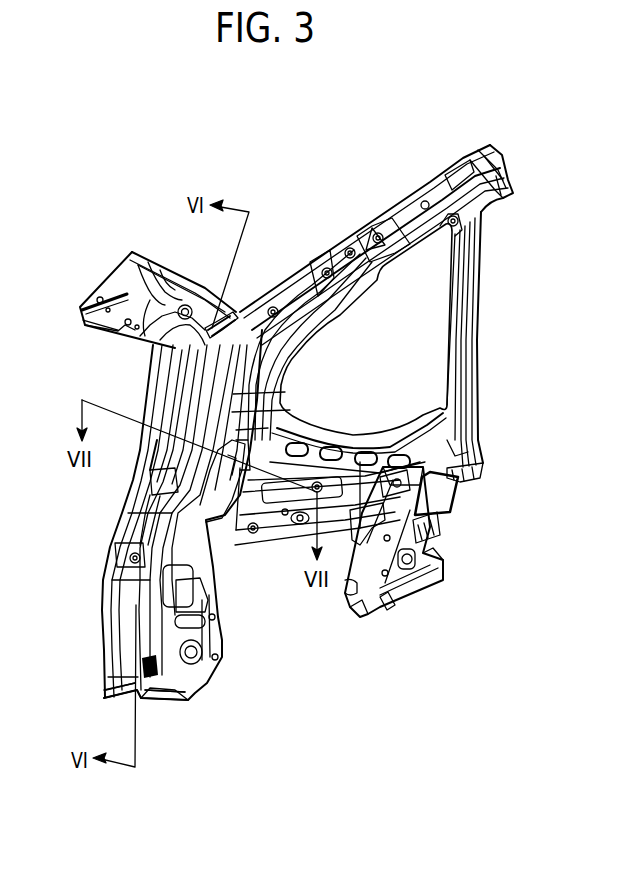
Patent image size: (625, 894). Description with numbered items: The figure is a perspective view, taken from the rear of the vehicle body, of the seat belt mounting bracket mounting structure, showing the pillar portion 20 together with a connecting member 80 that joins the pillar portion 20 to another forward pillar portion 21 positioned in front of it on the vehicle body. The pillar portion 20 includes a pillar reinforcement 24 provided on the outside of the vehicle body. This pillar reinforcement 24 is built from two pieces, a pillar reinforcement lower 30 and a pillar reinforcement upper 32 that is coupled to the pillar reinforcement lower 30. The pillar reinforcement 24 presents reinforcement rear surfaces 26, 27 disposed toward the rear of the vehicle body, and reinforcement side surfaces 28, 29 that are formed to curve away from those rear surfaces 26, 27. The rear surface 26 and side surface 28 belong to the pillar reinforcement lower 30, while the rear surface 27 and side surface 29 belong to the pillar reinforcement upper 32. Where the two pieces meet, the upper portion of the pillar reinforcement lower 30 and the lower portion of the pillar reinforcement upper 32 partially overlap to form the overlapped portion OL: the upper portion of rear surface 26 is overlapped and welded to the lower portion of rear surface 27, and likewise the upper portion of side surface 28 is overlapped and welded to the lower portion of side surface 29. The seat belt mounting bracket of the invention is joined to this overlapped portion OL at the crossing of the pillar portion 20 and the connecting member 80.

The pillar portion 20 is at (226, 645).
The forward pillar portion 21 is at (482, 298).
The pillar reinforcement 24 is at (115, 705).
The reinforcement rear surface 26 is at (145, 515).
The reinforcement rear surface 27 is at (185, 410).
The reinforcement side surface 28 is at (195, 508).
The reinforcement side surface 29 is at (297, 412).
The pillar reinforcement lower 30 is at (101, 552).
The pillar reinforcement upper 32 is at (190, 395).
The connecting member 80 is at (361, 431).
The overlapped portion OL is at (137, 467).